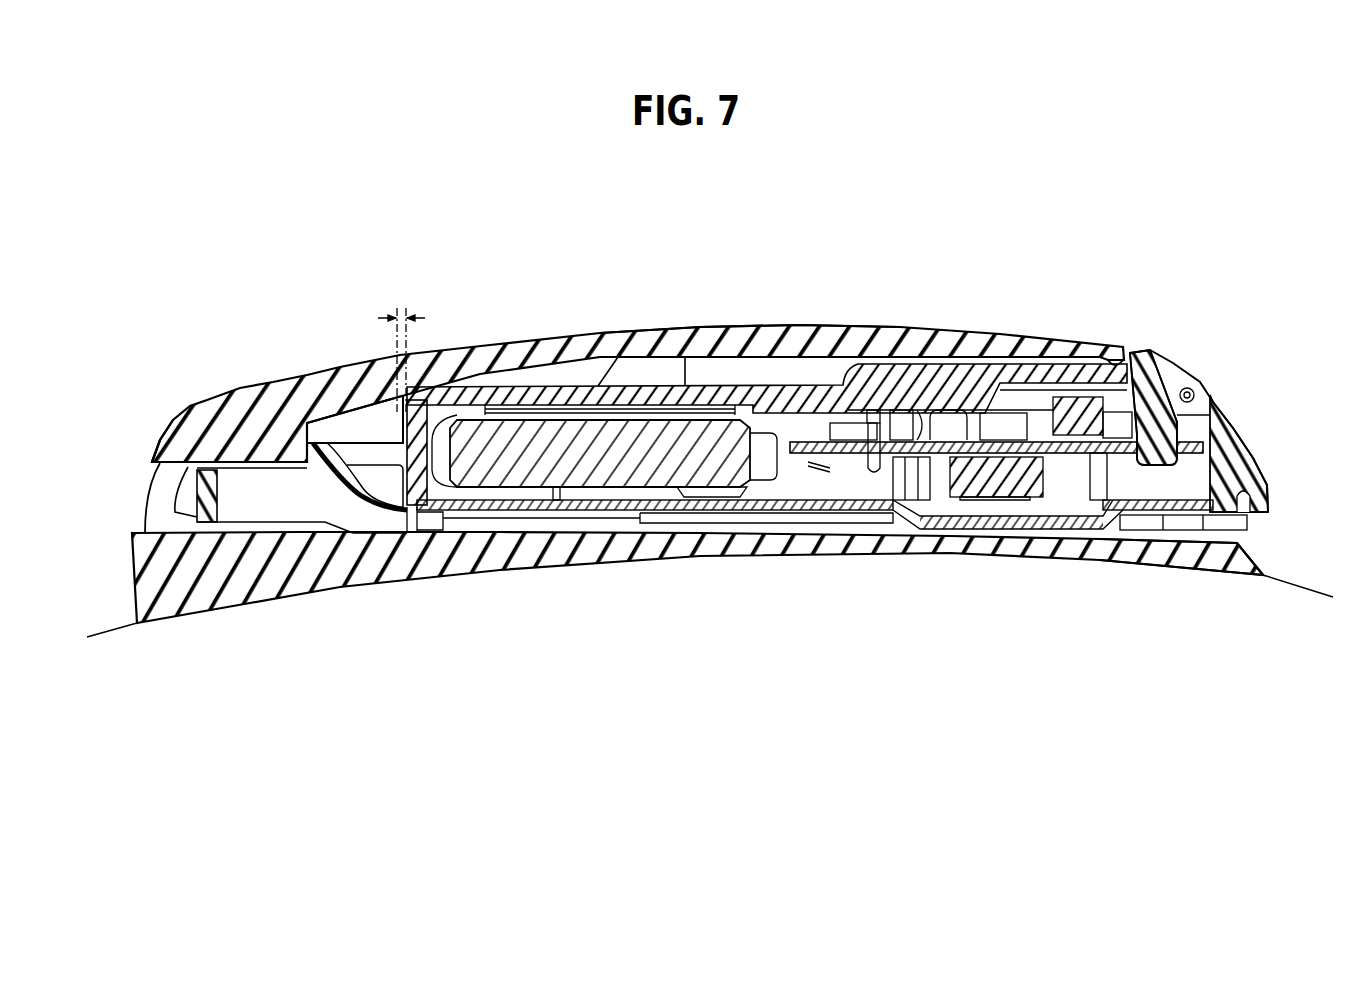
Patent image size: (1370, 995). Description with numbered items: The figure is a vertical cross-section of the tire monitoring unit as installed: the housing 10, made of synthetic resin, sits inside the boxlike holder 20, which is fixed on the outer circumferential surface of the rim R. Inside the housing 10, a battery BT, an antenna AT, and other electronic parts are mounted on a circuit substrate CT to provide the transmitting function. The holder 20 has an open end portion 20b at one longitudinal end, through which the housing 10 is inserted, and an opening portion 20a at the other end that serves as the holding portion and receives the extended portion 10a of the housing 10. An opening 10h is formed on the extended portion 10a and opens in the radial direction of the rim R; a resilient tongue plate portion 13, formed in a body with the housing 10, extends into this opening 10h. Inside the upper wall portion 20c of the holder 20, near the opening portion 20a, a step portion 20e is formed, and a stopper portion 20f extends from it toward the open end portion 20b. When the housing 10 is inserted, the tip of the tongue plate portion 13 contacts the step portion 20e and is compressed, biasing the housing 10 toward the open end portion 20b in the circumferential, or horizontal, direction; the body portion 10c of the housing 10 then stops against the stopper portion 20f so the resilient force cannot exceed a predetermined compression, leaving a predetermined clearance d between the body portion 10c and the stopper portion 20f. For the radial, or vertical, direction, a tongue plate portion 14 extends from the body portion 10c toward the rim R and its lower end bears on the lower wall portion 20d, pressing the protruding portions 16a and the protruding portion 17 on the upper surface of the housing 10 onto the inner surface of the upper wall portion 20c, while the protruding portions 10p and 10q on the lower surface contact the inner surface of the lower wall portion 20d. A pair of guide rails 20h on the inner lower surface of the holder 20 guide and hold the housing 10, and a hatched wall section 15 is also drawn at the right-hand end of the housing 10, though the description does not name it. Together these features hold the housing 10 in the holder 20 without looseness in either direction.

The housing 10 is at (1176, 349).
The extended portion 10a is at (196, 495).
The body portion 10c is at (430, 405).
The opening 10h is at (260, 495).
The protruding portion 10p is at (375, 527).
The protruding portion 10q is at (1190, 530).
The tongue plate portion 13 is at (352, 458).
The tongue plate portion 14 is at (782, 527).
The side wall portion 15 is at (1232, 425).
The protruding portion 16a is at (637, 362).
The protruding portion 17 is at (1012, 360).
The holder 20 is at (531, 330).
The opening portion 20a is at (152, 470).
The open end portion 20b is at (1130, 357).
The upper wall portion 20c is at (738, 340).
The lower wall portion 20d is at (1233, 548).
The step portion 20e is at (323, 418).
The stopper portion 20f is at (370, 415).
The guide rail 20h is at (186, 523).
The antenna AT is at (1193, 390).
The battery BT is at (636, 482).
The circuit substrate CT is at (1123, 450).
The rim R is at (1292, 590).
The clearance d is at (401, 349).